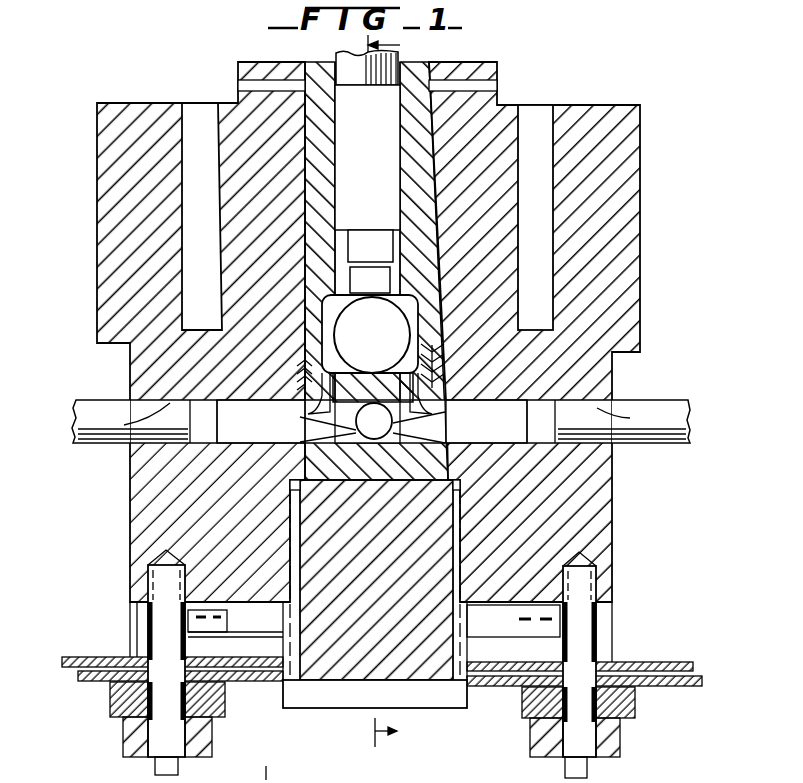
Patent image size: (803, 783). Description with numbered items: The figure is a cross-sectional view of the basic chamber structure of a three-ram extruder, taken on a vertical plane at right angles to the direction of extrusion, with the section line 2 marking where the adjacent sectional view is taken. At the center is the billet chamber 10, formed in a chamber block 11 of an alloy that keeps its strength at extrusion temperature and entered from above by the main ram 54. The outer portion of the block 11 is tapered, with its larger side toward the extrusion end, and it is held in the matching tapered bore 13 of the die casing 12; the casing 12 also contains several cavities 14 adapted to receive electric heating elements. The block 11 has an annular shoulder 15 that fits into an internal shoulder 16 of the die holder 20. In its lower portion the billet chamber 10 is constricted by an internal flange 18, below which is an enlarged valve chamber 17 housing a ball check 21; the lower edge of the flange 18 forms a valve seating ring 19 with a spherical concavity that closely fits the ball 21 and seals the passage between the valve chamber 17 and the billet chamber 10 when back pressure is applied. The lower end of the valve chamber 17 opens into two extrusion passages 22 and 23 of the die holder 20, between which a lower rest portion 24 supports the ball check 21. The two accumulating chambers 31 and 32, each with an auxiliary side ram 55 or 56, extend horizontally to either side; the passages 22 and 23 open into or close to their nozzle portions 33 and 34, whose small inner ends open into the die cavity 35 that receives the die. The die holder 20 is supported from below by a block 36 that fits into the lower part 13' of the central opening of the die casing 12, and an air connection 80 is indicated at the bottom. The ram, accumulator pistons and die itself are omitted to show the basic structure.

The section line 2- 2 is at (395, 391).
The billet chamber 10 is at (367, 157).
The chamber block 11 is at (405, 146).
The die casing 12 is at (641, 250).
The tapered bore 13 is at (376, 271).
The lower part of the central opening 13' is at (375, 580).
The cavities 14 is at (196, 118).
The annular shoulder 15 is at (440, 356).
The internal shoulder 16 is at (434, 366).
The valve chamber 17 is at (325, 320).
The internal flange 18 is at (338, 272).
The valve seating ring 19 is at (383, 296).
The die holder 20 is at (446, 437).
The ball check 21 is at (372, 335).
The extrusion passage 22 is at (322, 377).
The extrusion passage 23 is at (440, 386).
The lower rest portion 24 is at (372, 378).
The accumulating chamber 31 is at (140, 424).
The accumulating chamber 32 is at (610, 425).
The nozzle portion 33 is at (302, 423).
The nozzle portion 34 is at (433, 426).
The die cavity 35 is at (363, 421).
The block 36 is at (376, 580).
The main ram 54 is at (360, 84).
The auxiliary side ram 55 is at (203, 409).
The auxiliary side ram 56 is at (542, 408).
The air inlet 80 is at (262, 775).